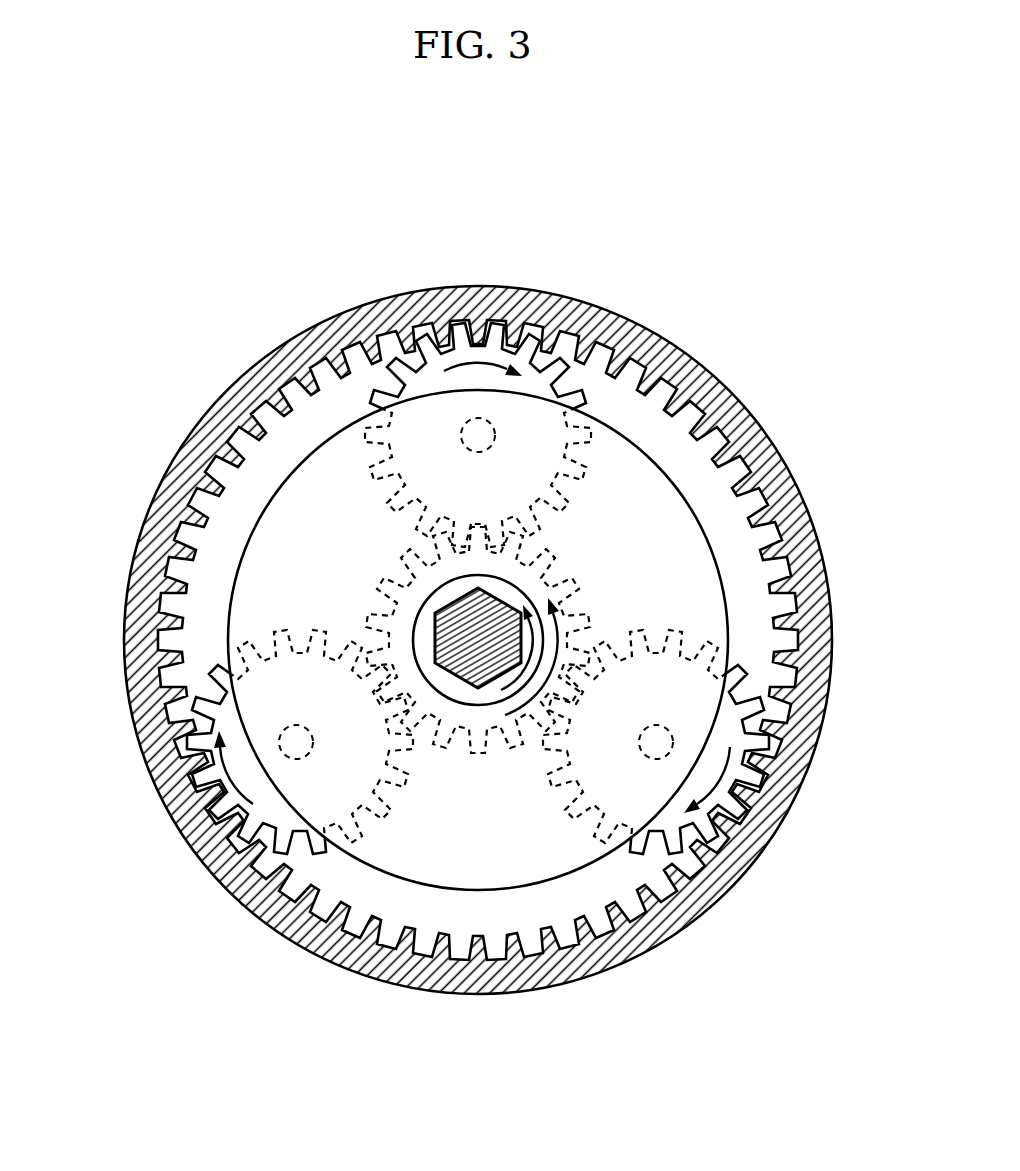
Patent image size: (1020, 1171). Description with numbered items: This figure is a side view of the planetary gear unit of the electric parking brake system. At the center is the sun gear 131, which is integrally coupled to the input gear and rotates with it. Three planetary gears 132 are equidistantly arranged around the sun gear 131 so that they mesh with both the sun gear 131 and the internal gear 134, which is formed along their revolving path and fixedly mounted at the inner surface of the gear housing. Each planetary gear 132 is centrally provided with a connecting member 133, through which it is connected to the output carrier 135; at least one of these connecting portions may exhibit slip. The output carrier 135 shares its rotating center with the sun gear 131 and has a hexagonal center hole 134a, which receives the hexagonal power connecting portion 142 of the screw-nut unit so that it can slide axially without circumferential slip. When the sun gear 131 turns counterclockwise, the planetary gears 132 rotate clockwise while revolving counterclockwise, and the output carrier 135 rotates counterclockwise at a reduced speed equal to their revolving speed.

The sun gear 131 is at (563, 583).
The planetary gears 132 is at (560, 363).
The connecting member 133 is at (477, 435).
The internal gear 134 is at (216, 493).
The center hole 134a is at (456, 668).
The output carrier 135 is at (283, 347).
The power connecting portion 142 is at (457, 633).